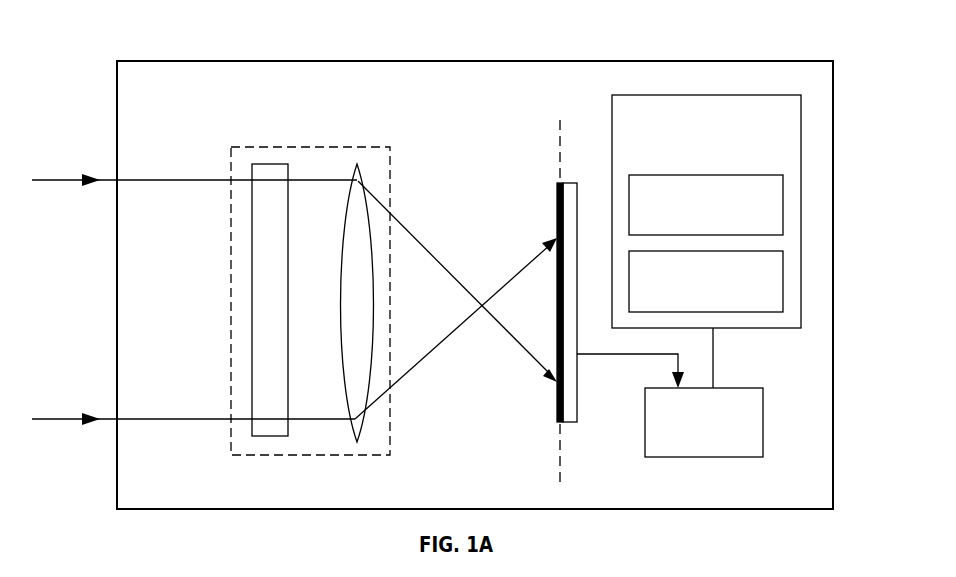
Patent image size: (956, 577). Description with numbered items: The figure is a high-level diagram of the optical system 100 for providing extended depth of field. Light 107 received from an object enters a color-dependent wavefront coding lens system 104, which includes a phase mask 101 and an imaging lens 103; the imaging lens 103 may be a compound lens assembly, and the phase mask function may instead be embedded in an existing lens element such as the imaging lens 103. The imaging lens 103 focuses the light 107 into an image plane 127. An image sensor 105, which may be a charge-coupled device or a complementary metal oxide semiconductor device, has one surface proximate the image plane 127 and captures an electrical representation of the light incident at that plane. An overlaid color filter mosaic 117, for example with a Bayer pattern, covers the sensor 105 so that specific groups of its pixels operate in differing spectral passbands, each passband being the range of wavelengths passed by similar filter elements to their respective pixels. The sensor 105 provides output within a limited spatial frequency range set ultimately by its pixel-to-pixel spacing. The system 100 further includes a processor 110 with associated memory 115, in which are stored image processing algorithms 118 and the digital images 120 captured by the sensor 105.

The optical system 100 is at (624, 23).
The phase mask 101 is at (250, 292).
The imaging lens 103 is at (372, 293).
The color-dependent wavefront coding lens system 104 is at (391, 180).
The image sensor 105 is at (577, 380).
The light 107 is at (61, 185).
The processor 110 is at (685, 445).
The memory 115 is at (687, 155).
The color filter mosaic 117 is at (557, 205).
The image processing algorithms 118 is at (687, 305).
The digital images 120 is at (687, 228).
The image plane 127 is at (560, 143).